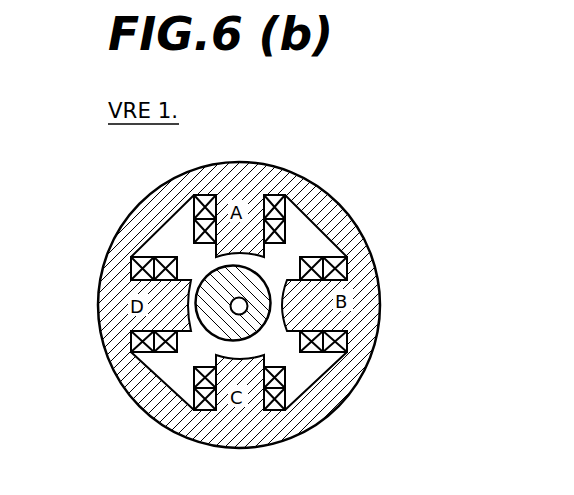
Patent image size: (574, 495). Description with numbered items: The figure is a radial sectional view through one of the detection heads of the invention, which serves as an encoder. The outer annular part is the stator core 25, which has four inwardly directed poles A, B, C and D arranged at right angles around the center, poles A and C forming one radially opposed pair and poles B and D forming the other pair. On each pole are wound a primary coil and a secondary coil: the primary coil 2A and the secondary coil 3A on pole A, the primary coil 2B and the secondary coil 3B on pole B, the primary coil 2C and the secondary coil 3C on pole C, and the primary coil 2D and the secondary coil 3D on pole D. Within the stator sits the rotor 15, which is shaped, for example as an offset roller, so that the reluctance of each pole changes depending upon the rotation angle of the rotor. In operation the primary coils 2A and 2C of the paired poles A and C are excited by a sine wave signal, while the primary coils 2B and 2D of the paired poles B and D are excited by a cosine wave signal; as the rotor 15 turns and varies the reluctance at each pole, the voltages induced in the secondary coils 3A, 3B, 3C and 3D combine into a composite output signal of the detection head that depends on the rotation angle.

The stator core 25 is at (284, 175).
The rotor 15 is at (269, 309).
The primary coil 2A is at (279, 207).
The secondary coil 3A is at (282, 232).
The primary coil 2B is at (337, 353).
The secondary coil 3B is at (313, 353).
The primary coil 2C is at (192, 400).
The secondary coil 3C is at (193, 372).
The primary coil 2D is at (143, 257).
The secondary coil 3D is at (167, 257).